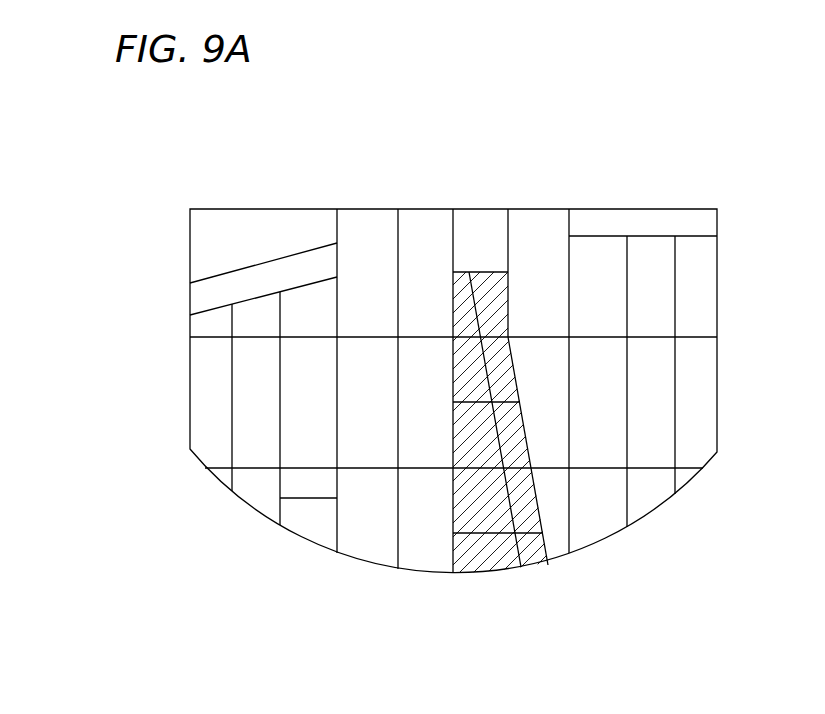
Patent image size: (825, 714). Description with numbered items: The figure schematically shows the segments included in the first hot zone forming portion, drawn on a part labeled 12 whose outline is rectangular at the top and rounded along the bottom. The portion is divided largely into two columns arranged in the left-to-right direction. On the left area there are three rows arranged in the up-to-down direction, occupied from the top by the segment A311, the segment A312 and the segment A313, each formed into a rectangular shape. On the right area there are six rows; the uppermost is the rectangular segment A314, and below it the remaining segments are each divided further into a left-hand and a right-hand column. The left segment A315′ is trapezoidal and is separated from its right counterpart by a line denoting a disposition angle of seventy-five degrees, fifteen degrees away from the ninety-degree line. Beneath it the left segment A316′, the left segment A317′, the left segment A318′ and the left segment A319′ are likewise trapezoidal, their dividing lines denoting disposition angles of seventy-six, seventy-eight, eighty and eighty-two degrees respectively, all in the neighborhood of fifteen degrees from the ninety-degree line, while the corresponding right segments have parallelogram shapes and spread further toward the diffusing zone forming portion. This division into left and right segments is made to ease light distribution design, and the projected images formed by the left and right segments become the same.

The wafer 12 is at (194, 158).
The segment A311 is at (432, 252).
The segment A312 is at (437, 402).
The segment A313 is at (422, 538).
The segment A314 is at (480, 225).
The left segment A315′ is at (495, 305).
The left segment A316′ is at (470, 372).
The left segment A317′ is at (478, 442).
The left segment A318′ is at (480, 498).
The left segment A319′ is at (480, 555).